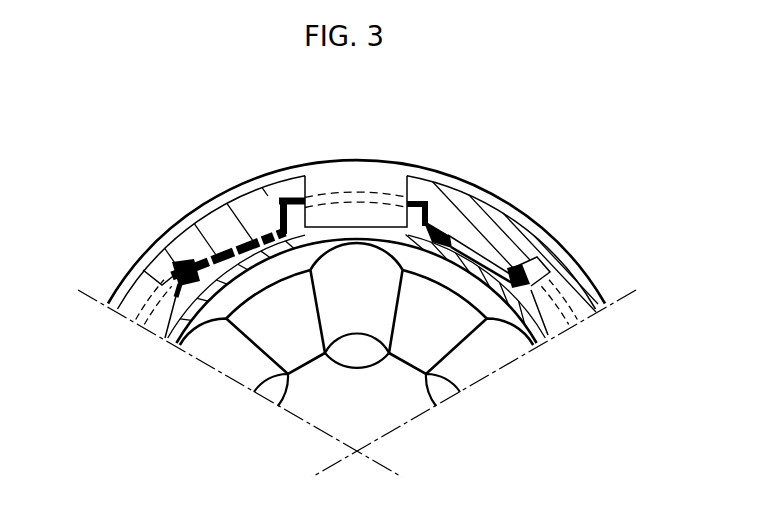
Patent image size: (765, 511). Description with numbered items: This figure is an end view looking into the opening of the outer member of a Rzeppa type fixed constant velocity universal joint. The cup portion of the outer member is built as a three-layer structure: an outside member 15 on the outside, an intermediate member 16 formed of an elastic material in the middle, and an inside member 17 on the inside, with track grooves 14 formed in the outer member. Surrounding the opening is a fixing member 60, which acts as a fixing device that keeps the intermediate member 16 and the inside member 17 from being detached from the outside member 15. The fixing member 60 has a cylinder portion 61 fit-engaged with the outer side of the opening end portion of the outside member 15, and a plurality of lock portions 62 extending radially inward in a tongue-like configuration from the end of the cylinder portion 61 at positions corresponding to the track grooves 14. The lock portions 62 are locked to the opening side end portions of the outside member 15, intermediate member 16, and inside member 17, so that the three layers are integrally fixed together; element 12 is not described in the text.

The rotor 12 is at (437, 332).
The track grooves 14 is at (365, 317).
The outside member 15 is at (185, 242).
The intermediate member 16 is at (206, 262).
The inside member 17 is at (276, 265).
The fixing member 60 is at (358, 241).
The cylinder portion 61 is at (518, 210).
The lock portions 62 is at (393, 183).